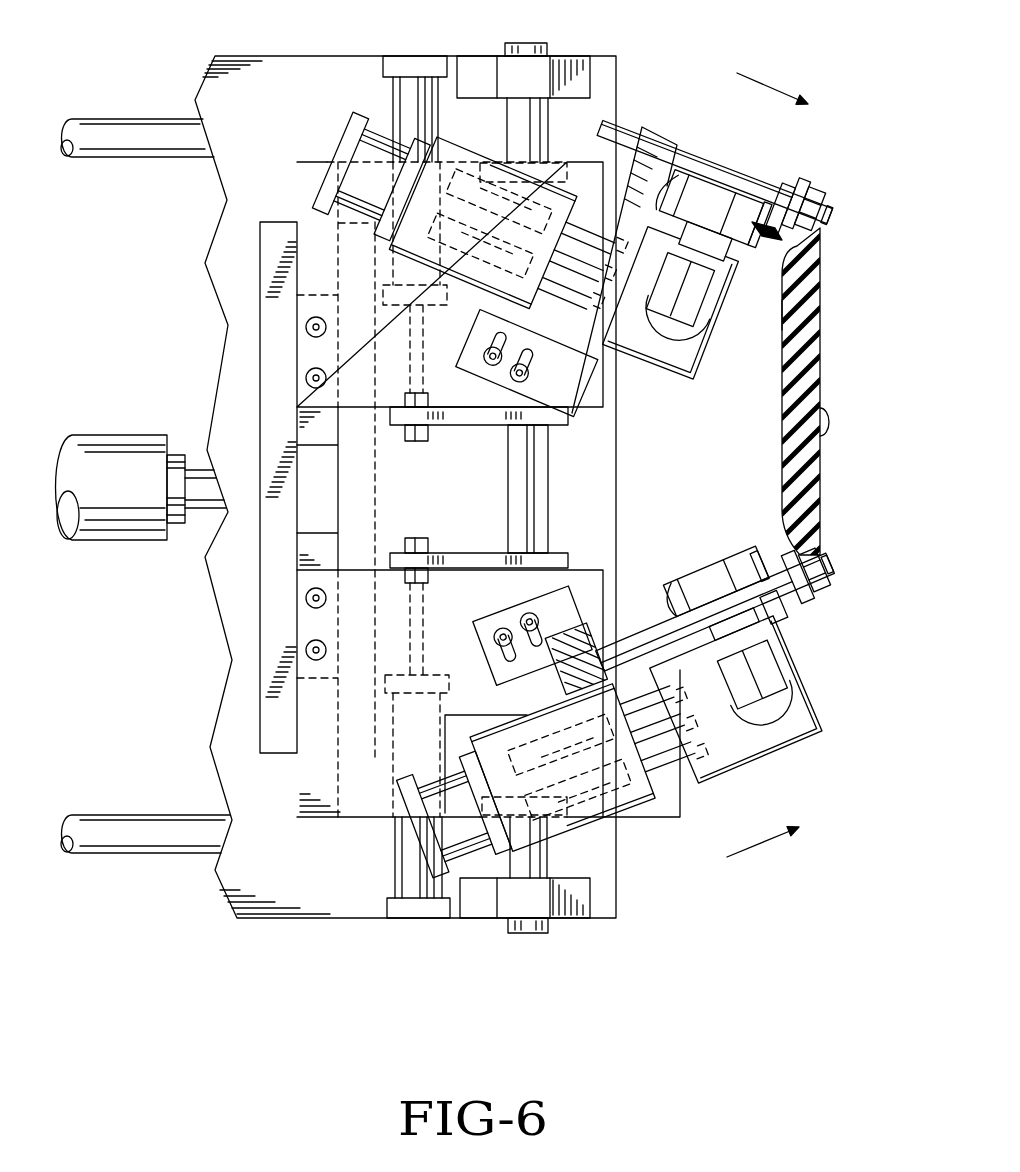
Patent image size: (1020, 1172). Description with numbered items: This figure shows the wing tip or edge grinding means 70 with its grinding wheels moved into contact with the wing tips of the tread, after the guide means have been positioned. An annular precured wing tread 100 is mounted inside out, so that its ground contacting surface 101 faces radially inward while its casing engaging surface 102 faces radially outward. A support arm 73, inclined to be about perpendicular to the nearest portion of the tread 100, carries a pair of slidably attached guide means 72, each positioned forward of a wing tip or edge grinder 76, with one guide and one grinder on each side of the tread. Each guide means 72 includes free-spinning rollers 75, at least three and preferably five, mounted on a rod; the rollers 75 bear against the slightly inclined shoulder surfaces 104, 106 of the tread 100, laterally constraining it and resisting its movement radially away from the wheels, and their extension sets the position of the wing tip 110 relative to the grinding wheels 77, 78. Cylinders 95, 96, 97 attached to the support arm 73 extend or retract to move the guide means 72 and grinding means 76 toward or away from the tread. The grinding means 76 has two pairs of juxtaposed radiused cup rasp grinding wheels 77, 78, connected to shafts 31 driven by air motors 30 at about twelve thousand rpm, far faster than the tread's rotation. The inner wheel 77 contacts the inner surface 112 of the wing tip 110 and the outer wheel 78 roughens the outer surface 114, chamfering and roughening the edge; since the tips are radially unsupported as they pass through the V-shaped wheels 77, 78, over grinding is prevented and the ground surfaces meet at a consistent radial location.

The air motor 30 is at (655, 325).
The shaft 31 is at (690, 262).
The wing tip or edge grinding means 70 is at (270, 950).
The guide means 72 is at (696, 157).
The support arm 73 is at (233, 703).
The roller 75 is at (815, 197).
The wing tip or edge grinder 76 is at (711, 173).
The grinding wheel 77 is at (680, 203).
The grinding wheel 78 is at (730, 200).
The cylinder 95 is at (118, 443).
The cylinder 96 is at (427, 60).
The cylinder 97 is at (378, 143).
The annular precured wing tread 100 is at (794, 411).
The ground contacting surface 101 is at (793, 445).
The casing engaging surface 102 is at (782, 400).
The shoulder surface 104 is at (827, 222).
The shoulder surface 106 is at (828, 570).
The wing tip 110 is at (780, 225).
The inner surface 112 is at (753, 222).
The outer surface 114 is at (753, 217).